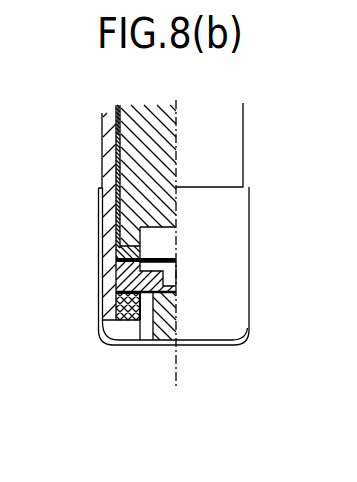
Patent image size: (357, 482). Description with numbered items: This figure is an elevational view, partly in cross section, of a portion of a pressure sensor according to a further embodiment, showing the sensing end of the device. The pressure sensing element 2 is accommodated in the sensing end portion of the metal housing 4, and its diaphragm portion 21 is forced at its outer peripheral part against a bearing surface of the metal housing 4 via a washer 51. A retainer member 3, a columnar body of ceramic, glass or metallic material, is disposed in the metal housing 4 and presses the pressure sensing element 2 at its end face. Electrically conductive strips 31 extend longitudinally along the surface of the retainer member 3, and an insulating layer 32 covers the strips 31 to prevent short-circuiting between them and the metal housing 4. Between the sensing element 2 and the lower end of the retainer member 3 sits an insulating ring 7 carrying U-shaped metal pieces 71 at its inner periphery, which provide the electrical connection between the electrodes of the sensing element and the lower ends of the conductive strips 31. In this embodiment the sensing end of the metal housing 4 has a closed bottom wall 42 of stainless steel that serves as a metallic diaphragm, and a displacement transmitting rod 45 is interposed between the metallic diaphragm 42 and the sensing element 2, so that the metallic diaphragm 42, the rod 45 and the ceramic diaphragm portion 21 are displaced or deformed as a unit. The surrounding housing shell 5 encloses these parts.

The pressure sensing element 2 is at (112, 278).
The retainer member 3 is at (130, 207).
The metal housing 4 is at (110, 162).
The housing shell 5 is at (174, 266).
The insulating ring 7 is at (141, 253).
The diaphragm portion 21 is at (172, 290).
The electrically conductive strips 31 is at (122, 132).
The insulating layer 32 is at (114, 129).
The bottom wall 42 is at (143, 345).
The displacement transmitting rod 45 is at (162, 345).
The washer 51 is at (126, 308).
The U-shaped metal pieces 71 is at (142, 257).